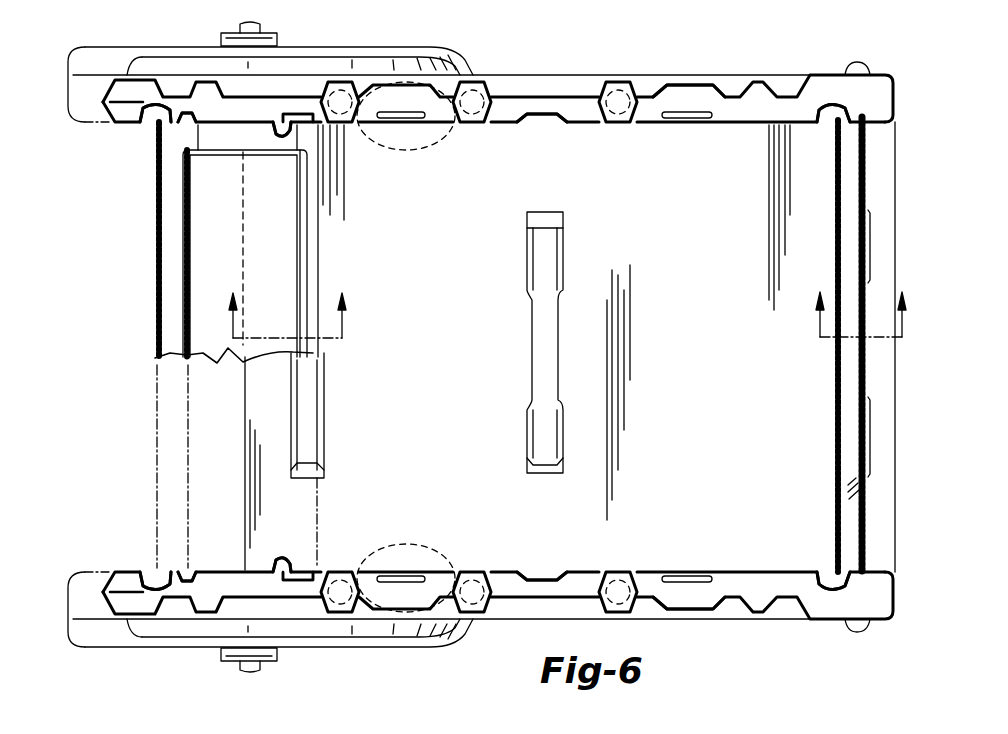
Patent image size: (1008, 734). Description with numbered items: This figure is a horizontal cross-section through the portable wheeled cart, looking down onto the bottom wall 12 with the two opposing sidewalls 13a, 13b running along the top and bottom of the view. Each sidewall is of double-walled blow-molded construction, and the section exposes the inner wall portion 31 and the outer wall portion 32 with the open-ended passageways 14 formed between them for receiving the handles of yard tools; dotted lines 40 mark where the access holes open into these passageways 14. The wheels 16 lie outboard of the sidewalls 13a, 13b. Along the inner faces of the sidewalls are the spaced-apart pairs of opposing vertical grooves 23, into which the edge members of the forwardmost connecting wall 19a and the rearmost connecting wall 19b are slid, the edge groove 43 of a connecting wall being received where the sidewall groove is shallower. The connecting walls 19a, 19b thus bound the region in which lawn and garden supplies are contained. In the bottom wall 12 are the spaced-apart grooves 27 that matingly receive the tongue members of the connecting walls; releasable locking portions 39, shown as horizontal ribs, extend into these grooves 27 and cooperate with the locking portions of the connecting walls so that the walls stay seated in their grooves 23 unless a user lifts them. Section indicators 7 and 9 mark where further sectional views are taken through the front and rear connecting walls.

The bottom wall 12 is at (585, 505).
The sidewall 13a is at (549, 56).
The sidewall 13b is at (503, 638).
The open-ended passageways 14 is at (457, 45).
The wheels 16 is at (100, 52).
The forwardmost connecting wall 19a is at (278, 256).
The rearmost connecting wall 19b is at (822, 393).
The grooves 23 is at (150, 126).
The spaced-apart grooves 27 is at (310, 377).
The inner wall portion 31 is at (723, 122).
The outer wall portion 32 is at (698, 84).
The releasable locking portions 39 is at (317, 388).
The dotted lines 40 is at (447, 143).
The edge groove 43 is at (163, 165).
The section line 7- 7 is at (286, 316).
The section line 9- 9 is at (849, 315).